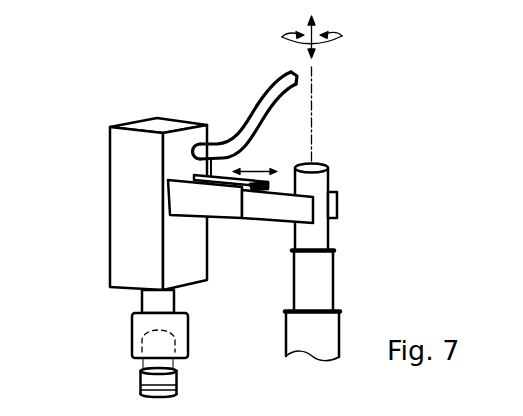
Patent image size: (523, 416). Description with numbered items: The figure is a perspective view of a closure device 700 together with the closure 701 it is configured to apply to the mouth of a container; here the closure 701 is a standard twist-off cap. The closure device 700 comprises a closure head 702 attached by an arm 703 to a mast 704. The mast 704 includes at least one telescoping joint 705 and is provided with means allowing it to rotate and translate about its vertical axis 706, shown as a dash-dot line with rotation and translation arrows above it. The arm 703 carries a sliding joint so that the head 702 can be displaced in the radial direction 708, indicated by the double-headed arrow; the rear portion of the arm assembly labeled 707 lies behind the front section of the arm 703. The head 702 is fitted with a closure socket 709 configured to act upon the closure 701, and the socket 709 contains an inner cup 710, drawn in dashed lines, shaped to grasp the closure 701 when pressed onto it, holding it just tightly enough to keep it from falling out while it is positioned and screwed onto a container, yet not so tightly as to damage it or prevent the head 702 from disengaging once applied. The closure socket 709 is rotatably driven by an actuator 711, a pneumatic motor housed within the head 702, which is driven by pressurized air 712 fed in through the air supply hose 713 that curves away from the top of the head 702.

The closure device 700 is at (100, 150).
The closure 701 is at (177, 381).
The closure head 702 is at (203, 127).
The arm 703 is at (270, 212).
The mast 704 is at (324, 181).
The telescoping joint 705 is at (337, 236).
The vertical axis 706 is at (314, 143).
The rear arm member 707 is at (240, 232).
The radial direction 708 is at (261, 166).
The closure socket 709 is at (134, 327).
The inner cup 710 is at (141, 347).
The actuator 711 is at (125, 212).
The pressurized air 712 is at (300, 78).
The air supply hose 713 is at (269, 89).